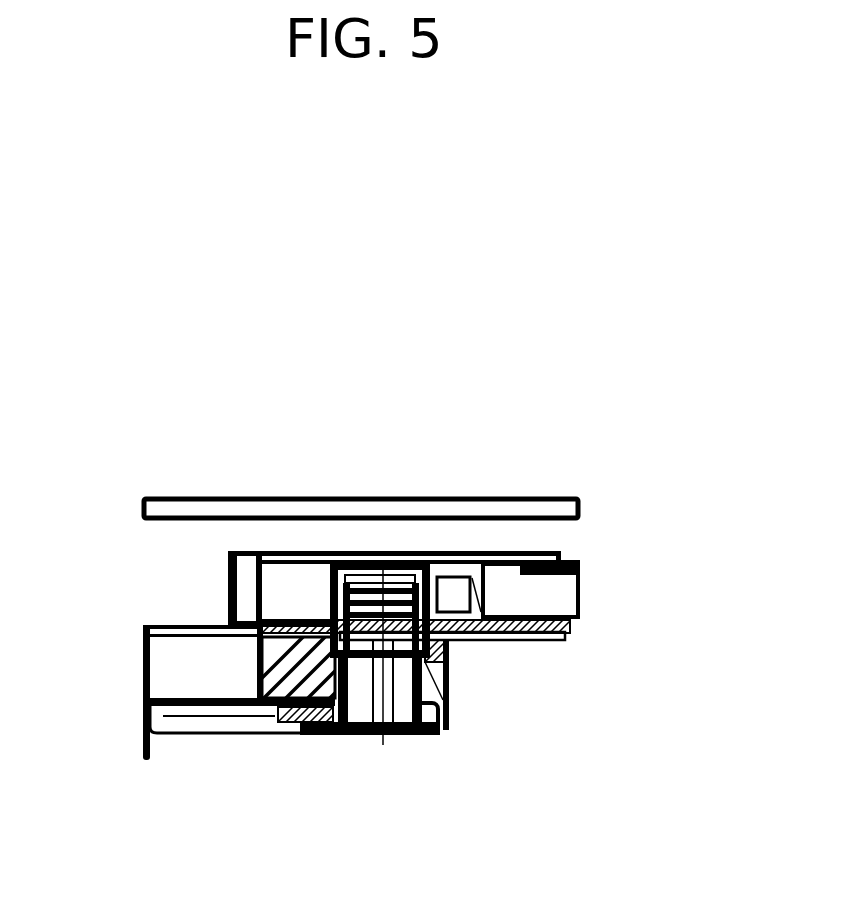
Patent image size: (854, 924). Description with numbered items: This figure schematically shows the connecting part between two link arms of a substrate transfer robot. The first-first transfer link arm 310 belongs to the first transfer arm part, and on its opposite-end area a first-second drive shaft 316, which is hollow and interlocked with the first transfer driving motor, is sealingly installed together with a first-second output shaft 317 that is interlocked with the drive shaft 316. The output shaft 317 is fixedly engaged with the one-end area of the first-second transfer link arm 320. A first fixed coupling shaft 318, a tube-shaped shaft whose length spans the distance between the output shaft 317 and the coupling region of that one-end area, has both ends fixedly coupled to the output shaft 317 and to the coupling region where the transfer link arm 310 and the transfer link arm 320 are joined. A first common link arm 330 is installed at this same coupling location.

The (1_1)-st transfer link arm 310 is at (140, 667).
The (1_2)-nd drive shaft 316 is at (383, 735).
The (1_2)-nd output shaft 317 is at (417, 735).
The first fixed coupling shaft 318 is at (449, 693).
The (1_2)-nd transfer link arm 320 is at (583, 592).
The first common link arm 330 is at (148, 622).